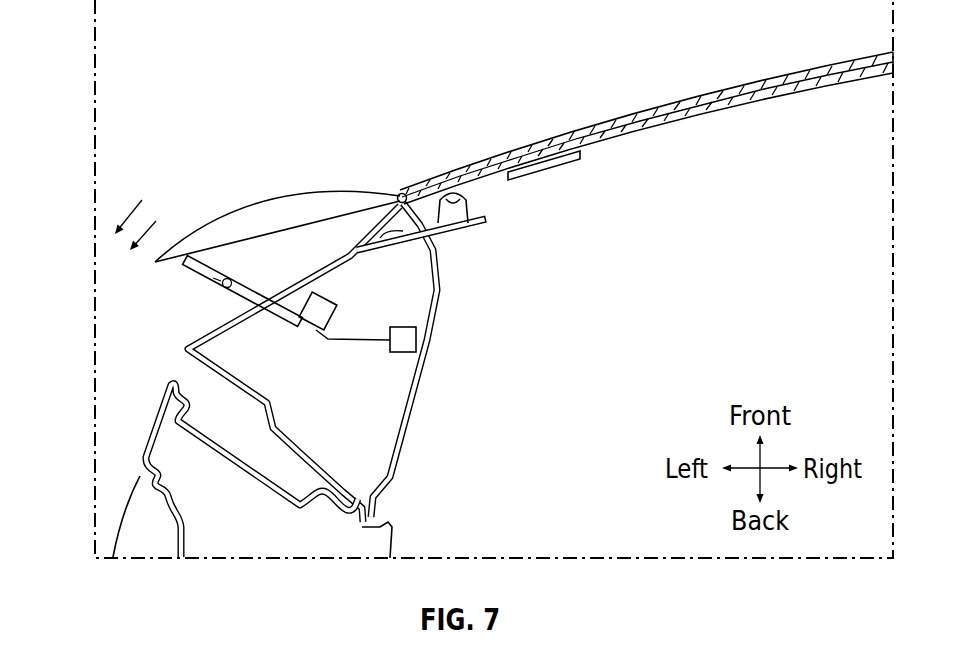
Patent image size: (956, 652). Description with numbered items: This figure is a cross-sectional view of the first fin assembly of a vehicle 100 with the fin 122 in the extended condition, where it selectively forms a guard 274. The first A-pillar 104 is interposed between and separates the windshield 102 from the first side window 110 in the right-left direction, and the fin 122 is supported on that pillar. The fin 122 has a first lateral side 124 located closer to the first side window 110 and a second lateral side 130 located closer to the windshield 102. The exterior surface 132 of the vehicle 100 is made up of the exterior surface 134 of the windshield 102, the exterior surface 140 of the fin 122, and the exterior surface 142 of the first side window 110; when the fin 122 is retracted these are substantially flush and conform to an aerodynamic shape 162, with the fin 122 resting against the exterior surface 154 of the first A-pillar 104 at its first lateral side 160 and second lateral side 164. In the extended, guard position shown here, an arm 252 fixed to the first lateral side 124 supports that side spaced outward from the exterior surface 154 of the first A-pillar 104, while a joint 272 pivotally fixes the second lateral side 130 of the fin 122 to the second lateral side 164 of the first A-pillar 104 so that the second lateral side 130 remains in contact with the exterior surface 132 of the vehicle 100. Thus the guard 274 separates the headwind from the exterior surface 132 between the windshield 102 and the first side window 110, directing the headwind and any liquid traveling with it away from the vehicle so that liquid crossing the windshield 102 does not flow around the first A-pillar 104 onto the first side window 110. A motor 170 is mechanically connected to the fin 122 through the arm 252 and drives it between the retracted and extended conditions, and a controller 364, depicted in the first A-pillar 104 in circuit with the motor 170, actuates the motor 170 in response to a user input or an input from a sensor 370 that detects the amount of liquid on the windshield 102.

The vehicle 100 is at (184, 46).
The windshield 102 is at (527, 148).
The first A-pillar 104 is at (388, 390).
The first side window 110 is at (125, 490).
The fin 122 is at (292, 288).
The first lateral side 124 is at (154, 263).
The second lateral side 130 is at (364, 180).
The exterior surface 132 is at (283, 293).
The exterior surface 134 is at (577, 131).
The exterior surface 140 is at (312, 199).
The exterior surface 142 is at (118, 530).
The exterior surface 154 is at (223, 279).
The first lateral side 160 is at (147, 436).
The aerodynamic shape 162 is at (183, 351).
The second lateral side 164 is at (402, 268).
The motor 170 is at (314, 329).
The arm 252 is at (204, 277).
The joint 272 is at (362, 172).
The guard 274 is at (325, 184).
The controller 364 is at (406, 342).
The sensor 370 is at (547, 172).